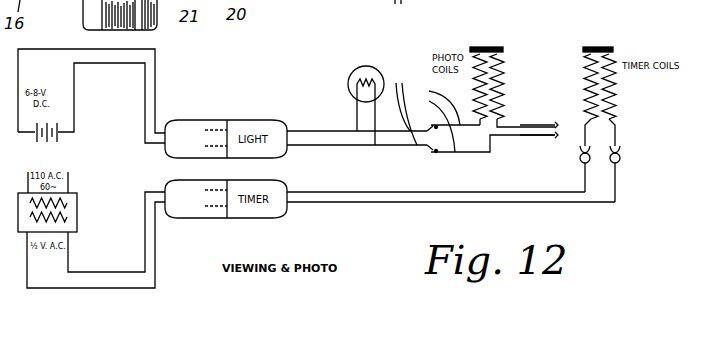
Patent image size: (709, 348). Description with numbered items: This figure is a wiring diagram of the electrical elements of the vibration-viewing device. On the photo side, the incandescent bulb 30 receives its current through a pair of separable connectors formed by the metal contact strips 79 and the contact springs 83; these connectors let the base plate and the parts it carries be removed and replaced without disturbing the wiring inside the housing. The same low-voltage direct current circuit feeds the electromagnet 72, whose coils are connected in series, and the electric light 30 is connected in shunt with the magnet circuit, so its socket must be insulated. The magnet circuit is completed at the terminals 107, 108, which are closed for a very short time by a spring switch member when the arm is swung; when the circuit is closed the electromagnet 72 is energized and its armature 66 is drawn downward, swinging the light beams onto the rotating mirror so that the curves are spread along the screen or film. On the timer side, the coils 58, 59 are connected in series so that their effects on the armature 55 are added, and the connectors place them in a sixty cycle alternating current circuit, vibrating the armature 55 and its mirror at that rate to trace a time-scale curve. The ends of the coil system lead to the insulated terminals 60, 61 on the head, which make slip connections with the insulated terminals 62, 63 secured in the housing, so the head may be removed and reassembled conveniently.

The incandescent bulb 30 is at (369, 66).
The contact springs 83 is at (405, 105).
The contact strips 79 is at (435, 118).
The armature 66 is at (478, 47).
The electromagnet 72 is at (499, 57).
The armature 55 is at (601, 47).
The coil 58 is at (588, 66).
The coil 59 is at (614, 58).
The terminal 107 is at (553, 120).
The terminal 108 is at (555, 136).
The insulated terminal 60 is at (587, 130).
The insulated terminal 61 is at (616, 137).
The insulated terminal 62 is at (621, 158).
The insulated terminal 63 is at (579, 160).